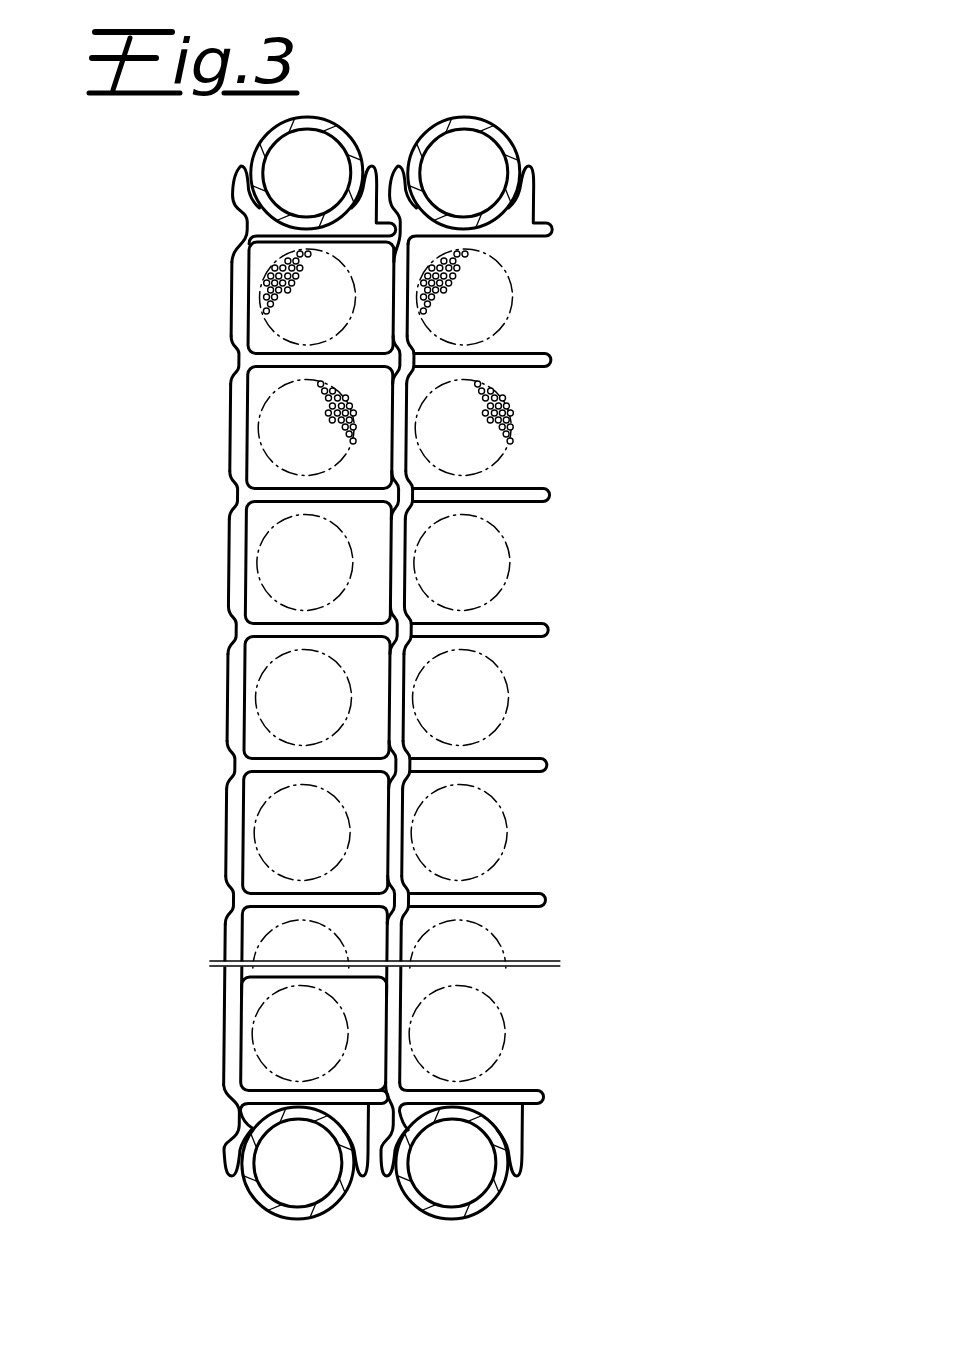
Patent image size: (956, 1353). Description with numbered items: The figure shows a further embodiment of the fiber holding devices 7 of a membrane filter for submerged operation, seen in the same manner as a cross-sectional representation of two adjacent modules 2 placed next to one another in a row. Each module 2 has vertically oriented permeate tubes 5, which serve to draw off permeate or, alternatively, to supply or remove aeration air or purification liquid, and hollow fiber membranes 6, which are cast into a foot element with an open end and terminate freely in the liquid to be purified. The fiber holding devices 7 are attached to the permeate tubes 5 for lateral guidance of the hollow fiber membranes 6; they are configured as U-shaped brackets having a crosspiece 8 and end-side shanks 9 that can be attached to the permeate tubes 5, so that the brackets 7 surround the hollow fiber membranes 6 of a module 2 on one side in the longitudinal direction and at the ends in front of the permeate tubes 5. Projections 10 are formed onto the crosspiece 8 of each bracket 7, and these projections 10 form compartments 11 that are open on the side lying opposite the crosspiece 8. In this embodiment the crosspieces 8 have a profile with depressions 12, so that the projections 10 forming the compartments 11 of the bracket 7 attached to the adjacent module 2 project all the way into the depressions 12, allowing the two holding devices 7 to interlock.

The module 2 is at (389, 664).
The permeate tube 5 is at (440, 128).
The hollow fiber membrane 6 is at (295, 520).
The fiber holding device 7 is at (372, 1052).
The crosspiece 8 is at (400, 708).
The shank 9 is at (229, 192).
The projection 10 is at (503, 890).
The compartment 11 is at (538, 462).
The depression 12 is at (228, 893).